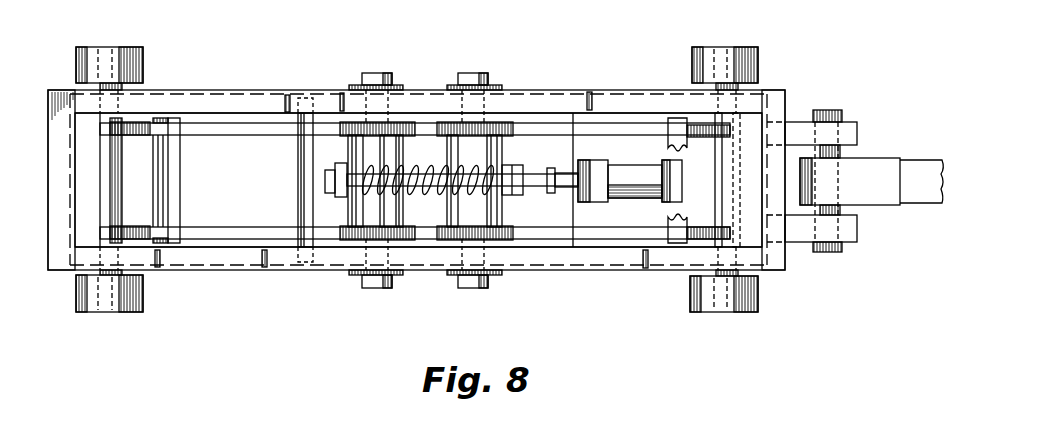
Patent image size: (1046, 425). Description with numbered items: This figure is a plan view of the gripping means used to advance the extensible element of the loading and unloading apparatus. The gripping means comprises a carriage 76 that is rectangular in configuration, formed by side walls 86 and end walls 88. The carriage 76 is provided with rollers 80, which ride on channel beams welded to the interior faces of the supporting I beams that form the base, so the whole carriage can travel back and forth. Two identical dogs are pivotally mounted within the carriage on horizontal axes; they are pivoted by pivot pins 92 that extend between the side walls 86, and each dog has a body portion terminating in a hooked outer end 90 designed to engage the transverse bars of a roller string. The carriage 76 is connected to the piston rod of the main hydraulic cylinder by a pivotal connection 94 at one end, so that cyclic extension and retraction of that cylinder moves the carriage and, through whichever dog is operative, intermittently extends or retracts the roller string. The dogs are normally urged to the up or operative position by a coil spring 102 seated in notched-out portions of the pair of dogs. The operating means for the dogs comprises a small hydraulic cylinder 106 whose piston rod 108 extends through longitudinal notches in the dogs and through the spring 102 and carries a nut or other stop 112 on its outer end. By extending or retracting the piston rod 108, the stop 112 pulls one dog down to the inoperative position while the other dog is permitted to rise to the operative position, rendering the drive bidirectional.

The carriage 76 is at (241, 102).
The rollers 80 is at (122, 47).
The side walls 86 is at (572, 100).
The end walls 88 is at (60, 90).
The hooked outer ends 90 is at (137, 135).
The pivot pins 92 is at (460, 73).
The pivotal connections 94 is at (870, 141).
The coil spring 102 is at (430, 195).
The small hydraulic cylinder 106 is at (630, 180).
The piston rod 108 is at (573, 172).
The nut or other stop 112 is at (338, 198).